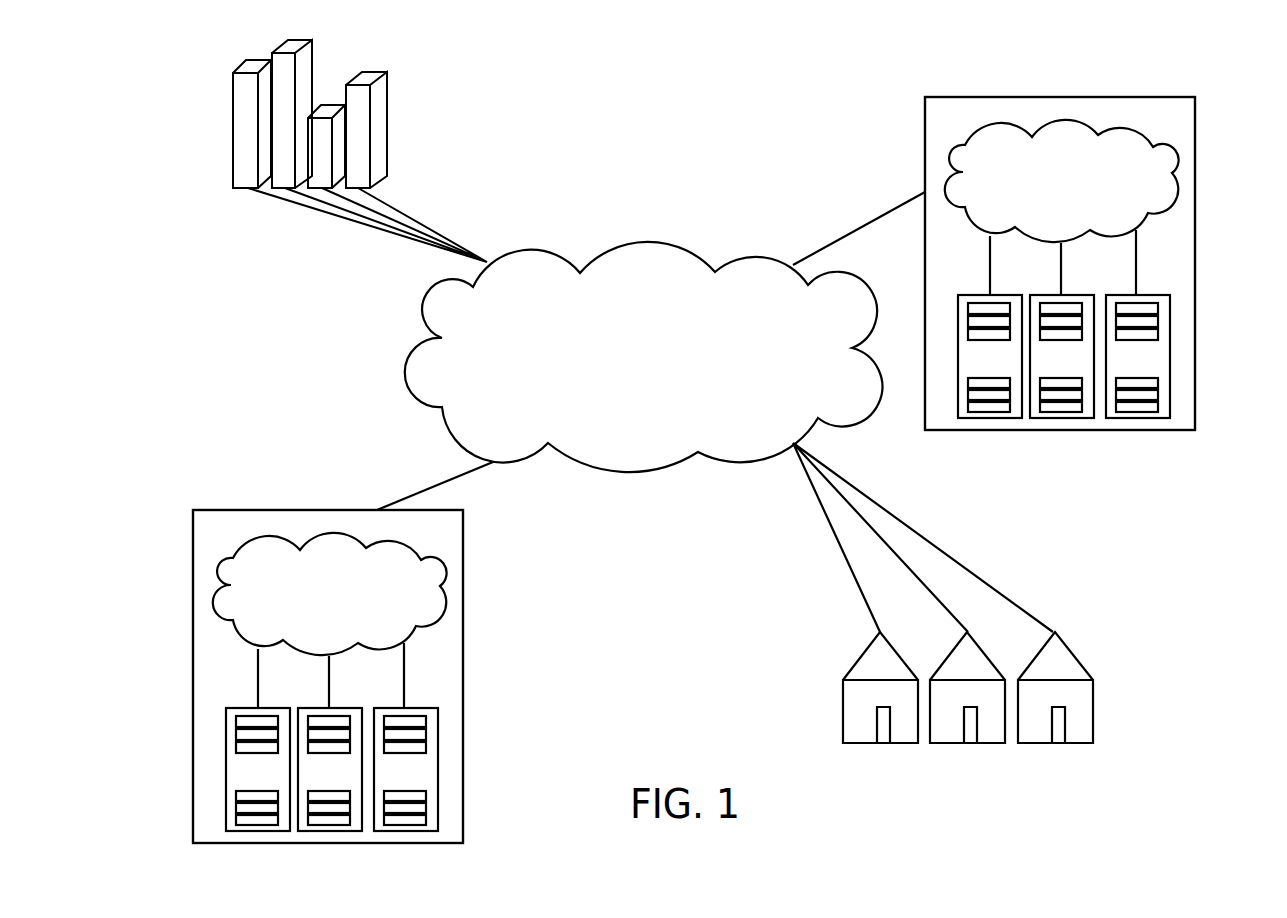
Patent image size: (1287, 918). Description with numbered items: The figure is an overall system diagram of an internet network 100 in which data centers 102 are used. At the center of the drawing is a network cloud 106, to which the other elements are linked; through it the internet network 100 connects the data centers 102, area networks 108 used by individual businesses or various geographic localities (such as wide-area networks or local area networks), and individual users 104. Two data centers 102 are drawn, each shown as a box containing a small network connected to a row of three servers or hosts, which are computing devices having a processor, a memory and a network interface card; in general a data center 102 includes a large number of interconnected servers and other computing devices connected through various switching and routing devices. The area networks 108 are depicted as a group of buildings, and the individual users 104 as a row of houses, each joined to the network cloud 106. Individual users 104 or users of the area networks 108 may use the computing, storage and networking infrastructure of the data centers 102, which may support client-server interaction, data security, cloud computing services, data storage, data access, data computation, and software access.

The internet network 100 is at (207, 366).
The data center 102 is at (940, 112).
The individual users 104 is at (843, 717).
The network 106 is at (677, 263).
The area network 108 is at (233, 133).